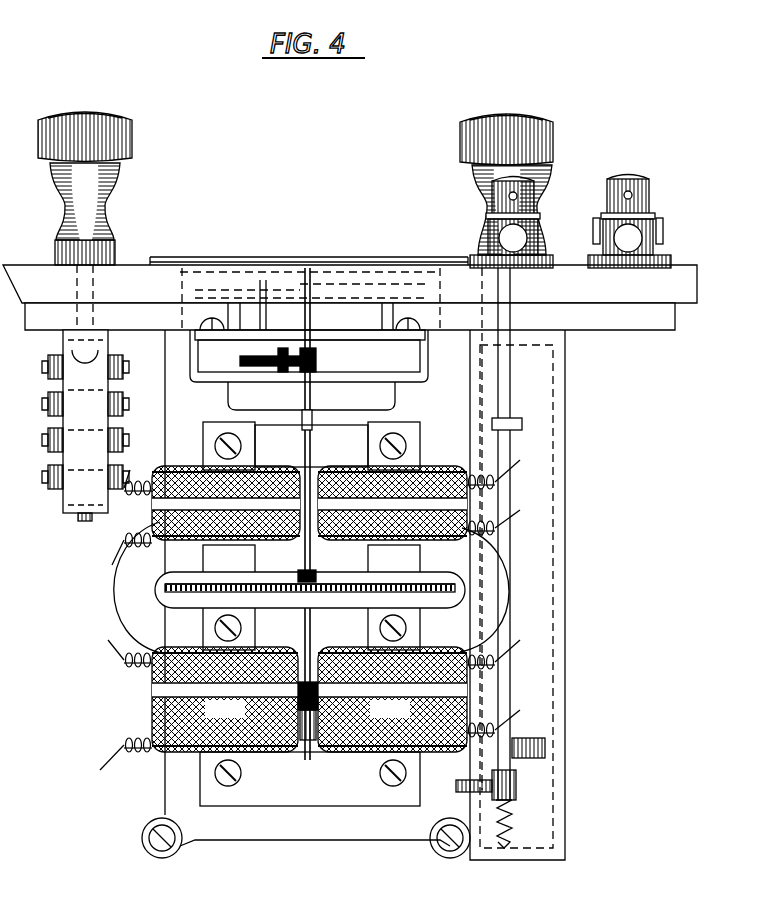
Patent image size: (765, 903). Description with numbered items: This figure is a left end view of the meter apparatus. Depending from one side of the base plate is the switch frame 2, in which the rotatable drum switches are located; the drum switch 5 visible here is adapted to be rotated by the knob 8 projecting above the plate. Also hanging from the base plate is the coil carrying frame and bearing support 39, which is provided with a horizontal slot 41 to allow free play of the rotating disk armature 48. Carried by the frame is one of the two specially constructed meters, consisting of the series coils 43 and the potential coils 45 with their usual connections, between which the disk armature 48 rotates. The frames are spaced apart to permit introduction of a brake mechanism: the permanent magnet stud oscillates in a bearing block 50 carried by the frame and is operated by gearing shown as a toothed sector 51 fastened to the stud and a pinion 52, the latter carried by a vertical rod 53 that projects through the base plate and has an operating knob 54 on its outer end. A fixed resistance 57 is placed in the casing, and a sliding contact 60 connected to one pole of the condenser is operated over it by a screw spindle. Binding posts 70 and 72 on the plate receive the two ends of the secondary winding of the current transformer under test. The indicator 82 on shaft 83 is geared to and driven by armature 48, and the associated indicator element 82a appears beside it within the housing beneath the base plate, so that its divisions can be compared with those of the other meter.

The switch frame 2 is at (63, 505).
The drum switch 5 is at (62, 347).
The knob 8 is at (95, 114).
The coil carrying frame and bearing support 39 is at (311, 588).
The horizontal slot 41 is at (205, 602).
The series coil 43 is at (316, 512).
The potential coil 45 is at (310, 705).
The rotating disk armature 48 is at (420, 592).
The bearing block 50 is at (546, 748).
The toothed sector 51 is at (456, 796).
The pinion 52 is at (516, 790).
The vertical rod 53 is at (506, 705).
The operating knob 54 is at (517, 120).
The fixed resistance 57 is at (545, 420).
The sliding contact 60 is at (520, 420).
The binding post 70 is at (538, 215).
The binding post 72 is at (655, 215).
The indicator 82 is at (322, 270).
The contact assembly 82a is at (320, 378).
The shaft 83 is at (312, 415).